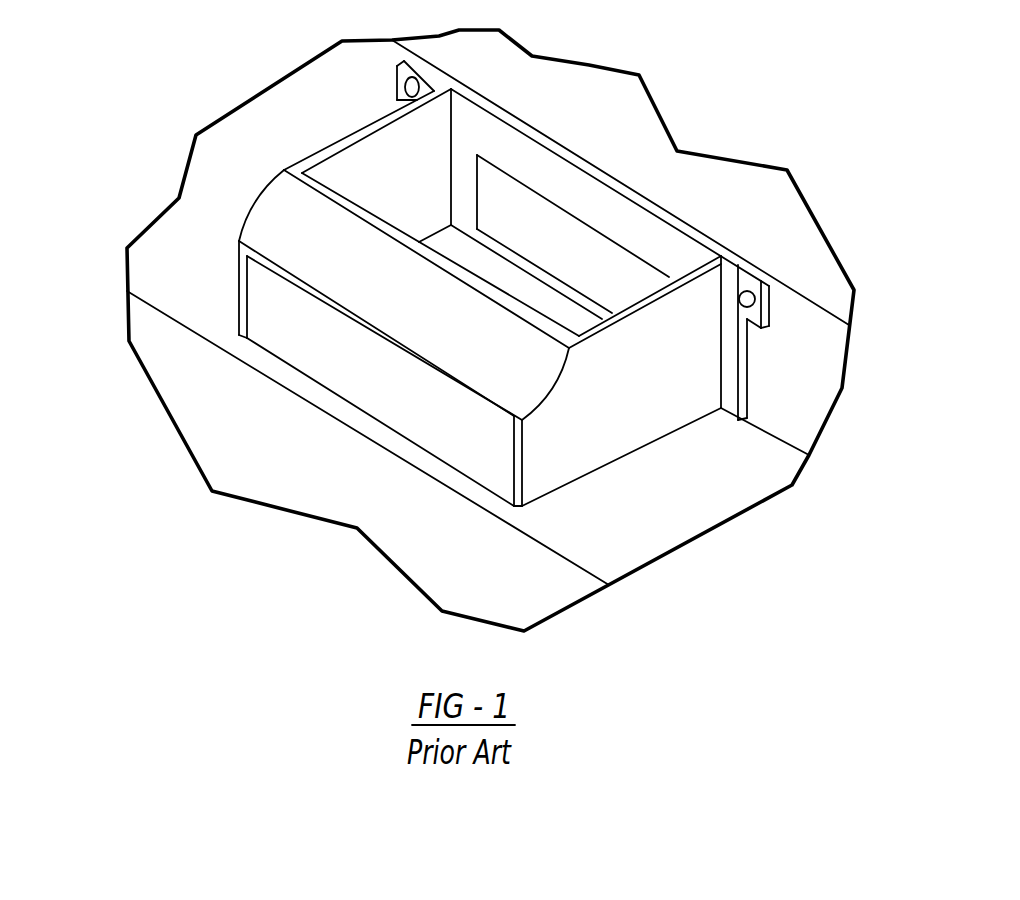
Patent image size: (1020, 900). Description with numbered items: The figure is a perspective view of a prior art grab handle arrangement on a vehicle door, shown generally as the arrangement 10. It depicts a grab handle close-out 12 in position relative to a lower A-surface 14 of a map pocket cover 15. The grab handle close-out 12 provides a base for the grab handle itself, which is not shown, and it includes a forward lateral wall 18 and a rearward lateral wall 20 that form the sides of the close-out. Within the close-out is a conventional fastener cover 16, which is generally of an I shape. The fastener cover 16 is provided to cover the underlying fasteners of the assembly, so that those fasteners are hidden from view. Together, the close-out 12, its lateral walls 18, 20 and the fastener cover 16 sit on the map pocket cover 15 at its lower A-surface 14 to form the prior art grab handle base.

The grab handle arrangement 10 is at (158, 156).
The grab handle close-out 12 is at (342, 277).
The lower A-surface 14 is at (693, 507).
The map pocket cover 15 is at (595, 562).
The fastener cover 16 is at (553, 245).
The forward lateral wall 18 is at (368, 173).
The rearward lateral wall 20 is at (657, 387).